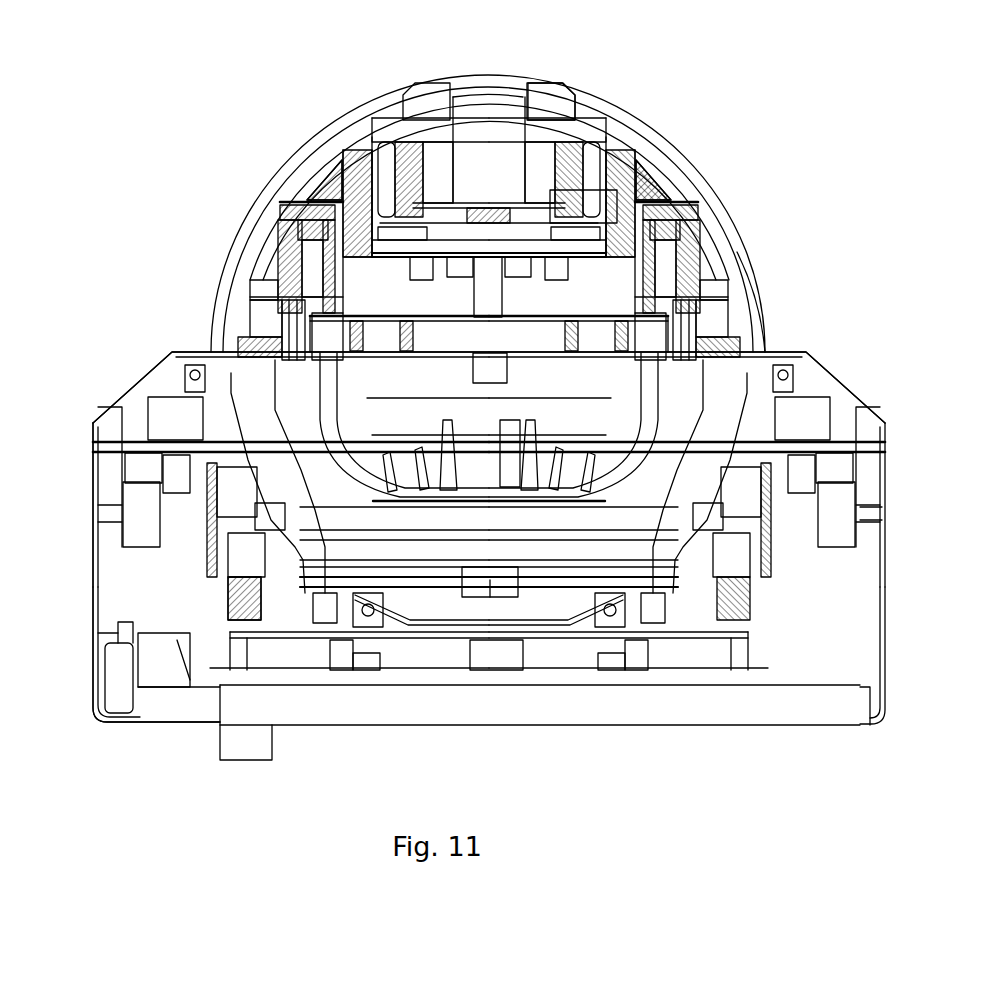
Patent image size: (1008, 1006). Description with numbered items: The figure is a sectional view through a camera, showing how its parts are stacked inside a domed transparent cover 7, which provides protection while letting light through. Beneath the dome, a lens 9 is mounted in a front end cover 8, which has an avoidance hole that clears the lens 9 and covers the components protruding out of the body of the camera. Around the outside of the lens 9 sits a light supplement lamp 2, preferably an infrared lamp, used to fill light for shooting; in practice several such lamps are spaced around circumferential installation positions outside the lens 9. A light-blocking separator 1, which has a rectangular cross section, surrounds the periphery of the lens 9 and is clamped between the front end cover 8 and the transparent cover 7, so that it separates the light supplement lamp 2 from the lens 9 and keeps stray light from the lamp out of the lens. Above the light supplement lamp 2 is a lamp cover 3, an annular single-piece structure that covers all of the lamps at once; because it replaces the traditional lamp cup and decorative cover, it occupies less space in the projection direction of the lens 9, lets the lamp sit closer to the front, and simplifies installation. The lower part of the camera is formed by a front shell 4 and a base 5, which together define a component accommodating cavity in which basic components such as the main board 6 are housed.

The light-blocking separator 1 is at (367, 100).
The light supplement lamp 2 is at (360, 142).
The lamp cover 3 is at (283, 197).
The front shell 4 is at (138, 390).
The base 5 is at (112, 568).
The main board 6 is at (255, 633).
The transparent cover 7 is at (757, 293).
The front end cover 8 is at (643, 152).
The lens 9 is at (497, 101).